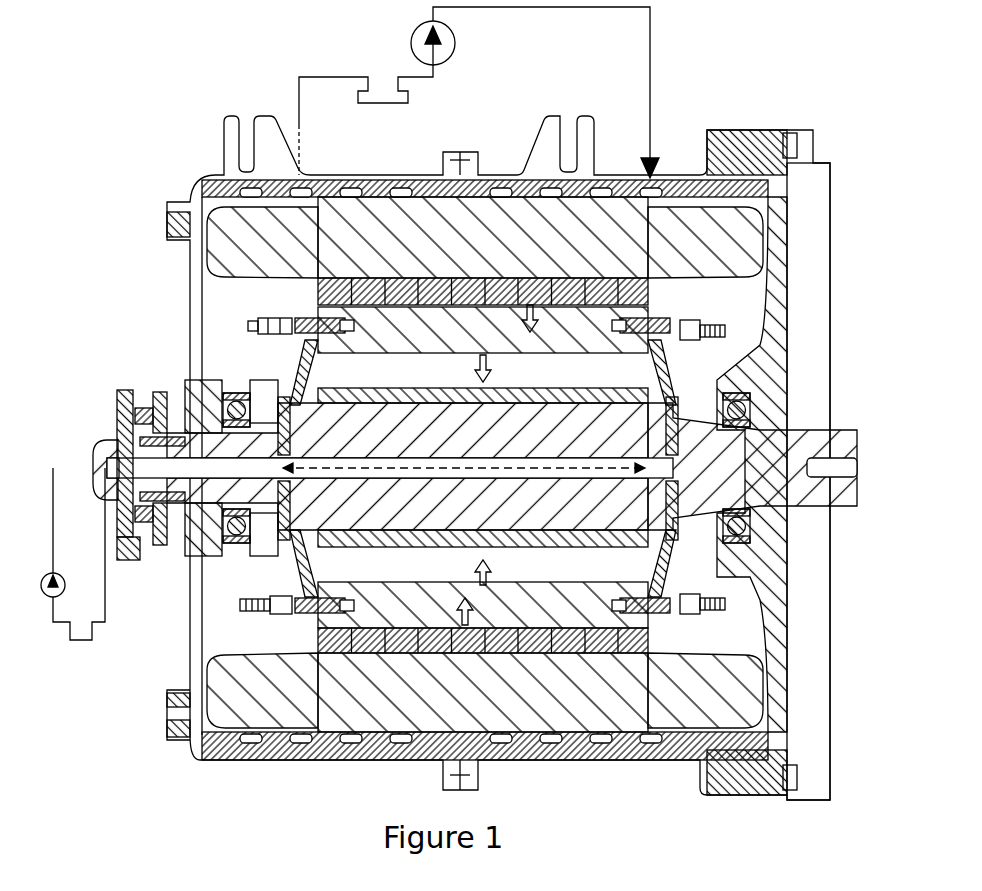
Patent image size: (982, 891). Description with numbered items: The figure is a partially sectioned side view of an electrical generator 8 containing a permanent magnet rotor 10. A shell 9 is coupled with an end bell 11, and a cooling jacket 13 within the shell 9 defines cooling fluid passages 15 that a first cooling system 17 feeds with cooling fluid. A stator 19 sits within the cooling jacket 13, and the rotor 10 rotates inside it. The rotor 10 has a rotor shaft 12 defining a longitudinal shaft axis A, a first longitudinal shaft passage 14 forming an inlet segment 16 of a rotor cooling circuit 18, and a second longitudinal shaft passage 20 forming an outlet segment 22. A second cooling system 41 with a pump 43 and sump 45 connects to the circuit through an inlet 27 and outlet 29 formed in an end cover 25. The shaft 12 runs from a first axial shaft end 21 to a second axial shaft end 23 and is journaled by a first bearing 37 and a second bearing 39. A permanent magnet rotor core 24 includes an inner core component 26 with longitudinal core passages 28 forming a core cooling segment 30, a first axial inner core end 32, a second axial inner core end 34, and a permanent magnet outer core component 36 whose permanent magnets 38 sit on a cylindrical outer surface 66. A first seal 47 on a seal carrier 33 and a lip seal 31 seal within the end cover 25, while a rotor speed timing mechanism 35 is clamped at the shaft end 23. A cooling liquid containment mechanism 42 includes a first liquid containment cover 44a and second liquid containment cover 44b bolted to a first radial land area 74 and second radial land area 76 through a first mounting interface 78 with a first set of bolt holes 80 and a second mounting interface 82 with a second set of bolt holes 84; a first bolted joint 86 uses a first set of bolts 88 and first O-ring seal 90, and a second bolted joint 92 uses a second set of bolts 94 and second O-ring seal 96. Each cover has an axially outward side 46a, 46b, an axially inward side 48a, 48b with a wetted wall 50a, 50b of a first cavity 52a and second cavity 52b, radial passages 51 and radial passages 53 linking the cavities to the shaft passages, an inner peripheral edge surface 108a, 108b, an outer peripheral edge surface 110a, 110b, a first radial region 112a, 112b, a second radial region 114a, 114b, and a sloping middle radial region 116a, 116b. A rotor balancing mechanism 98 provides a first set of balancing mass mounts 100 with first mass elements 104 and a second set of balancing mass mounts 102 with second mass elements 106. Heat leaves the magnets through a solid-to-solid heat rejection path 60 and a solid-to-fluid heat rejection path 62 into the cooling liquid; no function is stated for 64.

The electrical generator 8 is at (851, 53).
The shell 9 is at (600, 122).
The permanent magnet rotor 10 is at (488, 458).
The end bell 11 is at (815, 720).
The rotor shaft 12 is at (484, 467).
The cooling jacket 13 is at (498, 458).
The first longitudinal shaft passage 14 is at (484, 467).
The cooling fluid passages 15 is at (430, 748).
The inlet segment 16 is at (484, 467).
The first cooling system 17 is at (450, 92).
The rotor cooling circuit 18 is at (483, 467).
The stator 19 is at (215, 712).
The second longitudinal shaft passage 20 is at (483, 467).
The first axial shaft end 21 is at (850, 508).
The outlet segment 22 is at (335, 478).
The second axial shaft end 23 is at (100, 464).
The permanent magnet rotor core 24 is at (449, 464).
The end cover 25 is at (77, 470).
The inner core component 26 is at (395, 404).
The inlet 27 is at (86, 468).
The longitudinal core passages 28 is at (483, 467).
The outlet 29 is at (105, 498).
The core cooling segment 30 is at (483, 467).
The lip seal 31 is at (137, 416).
The first axial inner core end 32 is at (636, 316).
The seal carrier 33 is at (115, 522).
The second axial inner core end 34 is at (326, 326).
The rotor speed timing mechanism 35 is at (239, 468).
The permanent magnet outer core component 36 is at (483, 464).
The first bearing 37 is at (735, 510).
The permanent magnets 38 is at (425, 283).
The second bearing 39 is at (233, 393).
The second cooling system 41 is at (86, 567).
The cooling liquid containment mechanism 42 is at (489, 623).
The pump 43 is at (86, 556).
The first liquid containment cover 44a is at (506, 635).
The second liquid containment cover 44b is at (310, 616).
The sump 45 is at (93, 633).
The axially outward side 46a is at (665, 505).
The axially outward side 46b is at (285, 468).
The first seal 47 is at (140, 438).
The axially inward side 48a is at (646, 572).
The axially inward side 48b is at (322, 572).
The wetted wall 50a is at (633, 363).
The wetted wall 50b is at (355, 365).
The radial passages 51 is at (484, 471).
The first cavity 52a is at (486, 458).
The second cavity 52b is at (485, 458).
The radial passages 53 is at (296, 536).
The solid-to-solid heat rejection path 60 is at (525, 318).
The solid-to-fluid heat rejection path 62 is at (484, 368).
The coolant flow 64 is at (447, 404).
The cylindrical outer surface 66 is at (483, 453).
The first radial land area 74 is at (713, 446).
The second radial land area 76 is at (489, 607).
The first mounting interface 78 is at (621, 328).
The first set of bolt holes 80 is at (612, 323).
The second mounting interface 82 is at (325, 318).
The second set of bolt holes 84 is at (325, 311).
The first bolted joint 86 is at (622, 640).
The first set of bolts 88 is at (524, 629).
The first O-ring seal 90 is at (506, 629).
The second bolted joint 92 is at (483, 465).
The second set of bolts 94 is at (489, 618).
The second O-ring seal 96 is at (489, 606).
The rotor balancing mechanism 98 is at (238, 605).
The first set of balancing mass mounts 100 is at (718, 446).
The second set of balancing mass mounts 102 is at (250, 303).
The first set of mass elements 104 is at (690, 330).
The second set of mass elements 106 is at (258, 322).
The inner peripheral edge surface 108a is at (665, 505).
The inner peripheral edge surface 108b is at (297, 468).
The outer peripheral edge surface 110a is at (640, 282).
The outer peripheral edge surface 110b is at (300, 316).
The first radial region 112a is at (668, 512).
The first radial region 112b is at (240, 468).
The second radial region 114a is at (642, 505).
The second radial region 114b is at (297, 468).
The middle radial region 116a is at (645, 532).
The middle radial region 116b is at (333, 532).
The longitudinal shaft axis A is at (478, 466).